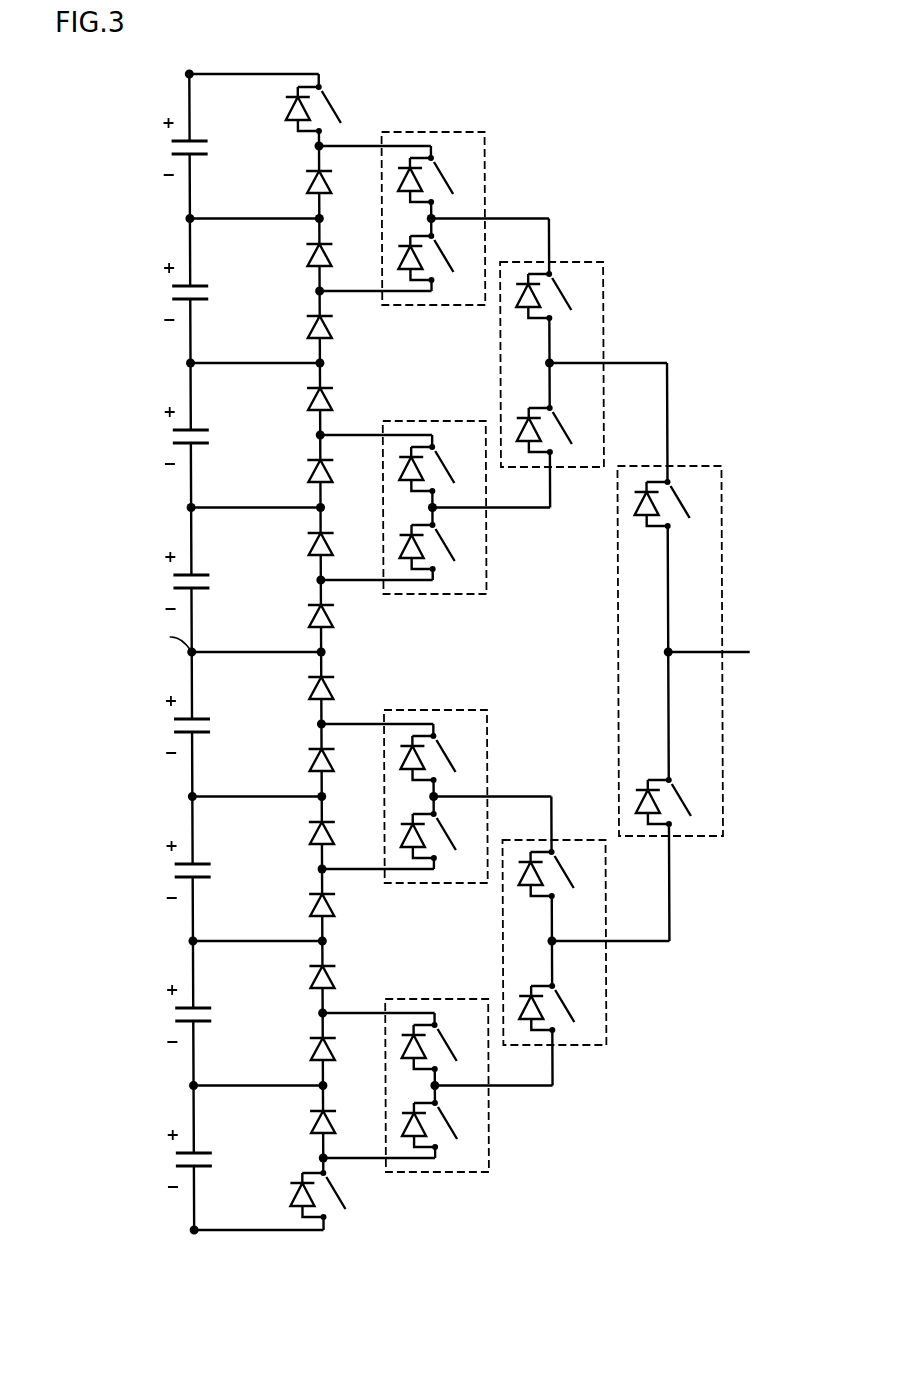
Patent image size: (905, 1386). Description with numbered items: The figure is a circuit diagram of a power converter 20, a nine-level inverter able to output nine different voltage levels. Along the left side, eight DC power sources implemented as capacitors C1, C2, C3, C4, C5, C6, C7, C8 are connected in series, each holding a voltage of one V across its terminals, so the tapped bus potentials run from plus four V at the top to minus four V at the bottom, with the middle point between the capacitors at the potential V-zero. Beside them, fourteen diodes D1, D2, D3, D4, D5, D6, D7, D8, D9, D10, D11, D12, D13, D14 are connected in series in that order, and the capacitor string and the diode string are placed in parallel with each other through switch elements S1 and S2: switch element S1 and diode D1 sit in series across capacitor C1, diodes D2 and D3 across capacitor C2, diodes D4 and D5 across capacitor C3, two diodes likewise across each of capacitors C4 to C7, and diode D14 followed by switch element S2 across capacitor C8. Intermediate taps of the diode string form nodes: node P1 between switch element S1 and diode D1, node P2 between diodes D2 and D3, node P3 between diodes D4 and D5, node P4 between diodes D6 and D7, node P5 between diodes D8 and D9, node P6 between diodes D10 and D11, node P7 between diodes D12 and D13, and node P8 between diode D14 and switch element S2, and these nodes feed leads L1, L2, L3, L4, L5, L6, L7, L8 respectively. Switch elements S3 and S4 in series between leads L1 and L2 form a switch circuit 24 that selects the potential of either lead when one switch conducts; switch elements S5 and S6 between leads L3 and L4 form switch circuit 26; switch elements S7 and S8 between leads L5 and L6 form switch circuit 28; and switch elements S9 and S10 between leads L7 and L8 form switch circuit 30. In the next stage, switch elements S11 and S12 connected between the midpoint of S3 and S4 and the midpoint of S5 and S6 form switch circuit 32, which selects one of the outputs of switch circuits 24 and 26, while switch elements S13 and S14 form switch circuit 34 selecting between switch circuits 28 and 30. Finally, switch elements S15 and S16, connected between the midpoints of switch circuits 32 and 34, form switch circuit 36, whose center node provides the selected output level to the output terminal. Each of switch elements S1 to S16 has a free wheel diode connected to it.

The power converter 20 is at (615, 56).
The switch circuit 24 is at (466, 218).
The switch circuit 26 is at (467, 507).
The switch circuit 28 is at (468, 796).
The switch circuit 30 is at (469, 1085).
The switch circuit 32 is at (584, 363).
The switch circuit 34 is at (586, 941).
The switch circuit 36 is at (700, 652).
The switch element S1 is at (320, 109).
The switch element S2 is at (324, 1195).
The switch element S3 is at (432, 180).
The switch element S4 is at (432, 258).
The switch element S5 is at (433, 469).
The switch element S6 is at (433, 547).
The switch element S7 is at (434, 758).
The switch element S8 is at (435, 836).
The switch element S9 is at (436, 1047).
The switch element S10 is at (443, 1125).
The switch element S11 is at (557, 296).
The switch element S12 is at (558, 430).
The switch element S13 is at (560, 874).
The switch element S14 is at (560, 1008).
The switch element S15 is at (676, 504).
The switch element S16 is at (677, 802).
The diode D1 is at (304, 183).
The diode D2 is at (304, 256).
The diode D3 is at (304, 328).
The diode D4 is at (305, 400).
The diode D5 is at (305, 472).
The diode D6 is at (305, 545).
The diode D7 is at (305, 617).
The diode D8 is at (306, 689).
The diode D9 is at (306, 761).
The diode D10 is at (300, 834).
The diode D11 is at (300, 906).
The diode D12 is at (300, 978).
The diode D13 is at (300, 1050).
The diode D14 is at (301, 1123).
The capacitor C1 is at (189, 146).
The capacitor C2 is at (190, 291).
The capacitor C3 is at (191, 435).
The capacitor C4 is at (191, 580).
The capacitor C5 is at (192, 724).
The capacitor C6 is at (193, 869).
The capacitor C7 is at (193, 1013).
The capacitor C8 is at (194, 1158).
The node P1 is at (306, 147).
The node P2 is at (306, 292).
The node P3 is at (307, 436).
The node P4 is at (308, 581).
The node P5 is at (308, 725).
The node P6 is at (309, 870).
The node P7 is at (309, 1014).
The node P8 is at (310, 1159).
The lead L1 is at (364, 146).
The lead L2 is at (364, 291).
The lead L3 is at (364, 435).
The lead L4 is at (364, 580).
The lead L5 is at (364, 724).
The lead L6 is at (364, 869).
The lead L7 is at (364, 1013).
The lead L8 is at (364, 1158).